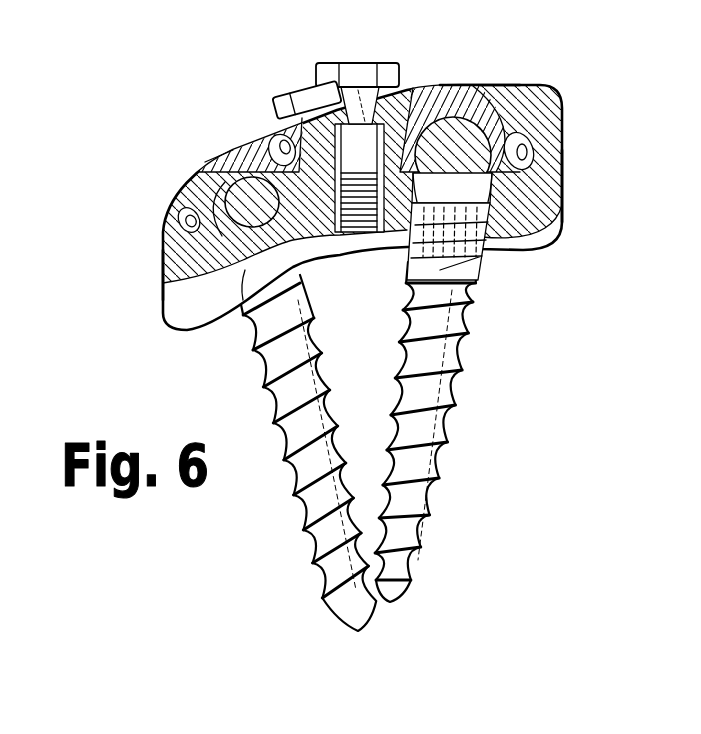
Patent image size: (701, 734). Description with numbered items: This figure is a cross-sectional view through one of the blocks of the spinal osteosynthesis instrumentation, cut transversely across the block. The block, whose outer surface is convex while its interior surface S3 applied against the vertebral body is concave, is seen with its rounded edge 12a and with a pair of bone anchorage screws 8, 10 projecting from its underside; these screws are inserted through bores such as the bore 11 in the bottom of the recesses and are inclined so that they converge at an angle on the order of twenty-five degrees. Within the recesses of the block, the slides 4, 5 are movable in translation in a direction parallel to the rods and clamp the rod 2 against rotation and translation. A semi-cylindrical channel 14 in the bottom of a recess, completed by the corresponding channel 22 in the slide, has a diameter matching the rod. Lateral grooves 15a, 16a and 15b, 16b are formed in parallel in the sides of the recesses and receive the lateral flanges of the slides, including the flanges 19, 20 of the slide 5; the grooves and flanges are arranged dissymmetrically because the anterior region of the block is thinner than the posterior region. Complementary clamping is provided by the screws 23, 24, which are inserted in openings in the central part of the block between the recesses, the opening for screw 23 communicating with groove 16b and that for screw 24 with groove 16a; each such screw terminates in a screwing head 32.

The rigid rod 2 is at (528, 88).
The slide 4 is at (472, 87).
The slide 5 is at (198, 155).
The bone anchorage screw 8 is at (300, 533).
The bone anchorage screw 10 is at (443, 440).
The bore 11 is at (549, 200).
The rounded edge 12a is at (188, 178).
The semi-cylindrical channel 14 is at (248, 305).
The lateral groove 15a is at (533, 168).
The lateral groove 15b is at (187, 231).
The lateral groove 16a is at (410, 122).
The lateral groove 16b is at (203, 156).
The lateral flange 19 is at (268, 141).
The lateral flange 20 is at (183, 217).
The channel 22 is at (170, 278).
The screw 23 is at (286, 88).
The screw 24 is at (393, 63).
The screwing head 32 is at (357, 62).
The interior surface S3 is at (328, 257).